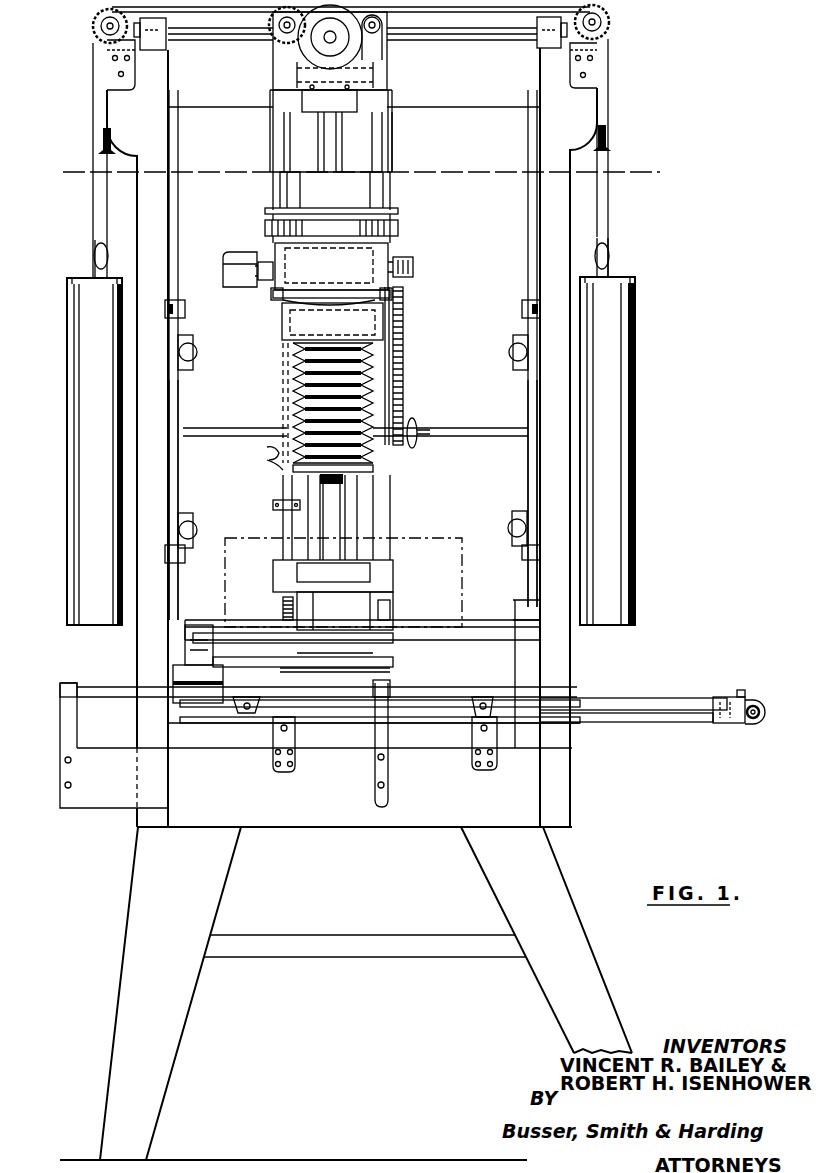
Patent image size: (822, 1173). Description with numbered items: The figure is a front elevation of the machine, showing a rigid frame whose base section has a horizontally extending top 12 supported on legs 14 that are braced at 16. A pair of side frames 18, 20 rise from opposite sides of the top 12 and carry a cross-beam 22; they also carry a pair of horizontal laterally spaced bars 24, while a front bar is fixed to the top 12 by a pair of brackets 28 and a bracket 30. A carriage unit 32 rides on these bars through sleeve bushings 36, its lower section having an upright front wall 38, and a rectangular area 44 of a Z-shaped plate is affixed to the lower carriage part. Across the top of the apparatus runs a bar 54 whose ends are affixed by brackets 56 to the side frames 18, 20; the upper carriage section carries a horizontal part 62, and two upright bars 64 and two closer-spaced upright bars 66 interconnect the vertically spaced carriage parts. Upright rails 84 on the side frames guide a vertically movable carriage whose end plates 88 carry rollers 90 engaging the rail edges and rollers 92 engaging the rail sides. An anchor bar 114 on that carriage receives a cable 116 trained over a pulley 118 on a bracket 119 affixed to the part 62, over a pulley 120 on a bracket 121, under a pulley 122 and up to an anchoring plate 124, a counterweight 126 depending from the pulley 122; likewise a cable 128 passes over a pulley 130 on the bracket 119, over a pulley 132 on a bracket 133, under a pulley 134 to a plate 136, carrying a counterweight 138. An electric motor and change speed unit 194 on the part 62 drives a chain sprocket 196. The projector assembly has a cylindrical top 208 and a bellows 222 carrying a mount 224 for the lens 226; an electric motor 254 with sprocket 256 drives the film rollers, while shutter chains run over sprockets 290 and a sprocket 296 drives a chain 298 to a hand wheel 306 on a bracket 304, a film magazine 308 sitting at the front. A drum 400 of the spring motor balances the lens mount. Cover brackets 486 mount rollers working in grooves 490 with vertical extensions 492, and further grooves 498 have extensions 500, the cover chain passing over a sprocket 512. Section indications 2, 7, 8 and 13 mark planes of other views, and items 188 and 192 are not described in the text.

The section line 2- 2 is at (410, 867).
The section line 7- 7 is at (783, 629).
The section line 8- 8 is at (786, 706).
The section line 13- 13 is at (405, 130).
The top 12 is at (302, 828).
The legs 14 is at (183, 1018).
The brace 16 is at (355, 956).
The side frame 18 is at (140, 198).
The side frame 20 is at (578, 200).
The cross-beam 22 is at (192, 95).
The bars 24 is at (474, 628).
The brackets 28 is at (78, 697).
The bracket 30 is at (98, 812).
The carriage unit 32 is at (422, 550).
The sleeve bushings 36 is at (105, 690).
The wall 38 is at (345, 604).
The rectangular area 44 is at (262, 646).
The bar 54 is at (441, 38).
The brackets 56 is at (160, 33).
The part 62 is at (300, 118).
The bars 64 is at (285, 151).
The bars 66 is at (345, 126).
The rails 84 is at (172, 252).
The plate 88 is at (178, 390).
The rollers 90 is at (197, 355).
The rollers 92 is at (178, 315).
The anchor bar 114 is at (268, 451).
The cable 116 is at (270, 186).
The pulley 118 is at (272, 21).
The bracket 119 is at (300, 68).
The pulley 120 is at (611, 17).
The bracket 121 is at (600, 48).
The pulley 122 is at (611, 244).
The plate 124 is at (607, 138).
The counterweight 126 is at (640, 401).
The cable 128 is at (390, 160).
The pulley 130 is at (388, 44).
The pulley 132 is at (104, 21).
The bracket 133 is at (110, 72).
The pulley 134 is at (95, 250).
The plate 136 is at (104, 137).
The counterweight 138 is at (76, 401).
The block 188 is at (175, 673).
The clamp 192 is at (198, 633).
The electric motor and change speed unit 194 is at (345, 42).
The chain sprocket 196 is at (269, 46).
The cylindrical top 208 is at (352, 198).
The bellows 222 is at (293, 393).
The mount 224 is at (270, 468).
The lens 226 is at (333, 488).
The electric motor 254 is at (244, 288).
The sprocket 256 is at (262, 265).
The sprocket 290 is at (395, 305).
The sprocket 296 is at (395, 298).
The chain 298 is at (405, 380).
The bracket 304 is at (382, 365).
The hand wheel 306 is at (420, 440).
The film magazine 308 is at (290, 330).
The drum 400 is at (415, 272).
The brackets 486 is at (236, 716).
The grooves 490 is at (310, 722).
The vertical extensions 492 is at (488, 696).
The grooves 498 is at (676, 722).
The vertical extensions 500 is at (724, 697).
The sprocket 512 is at (756, 726).